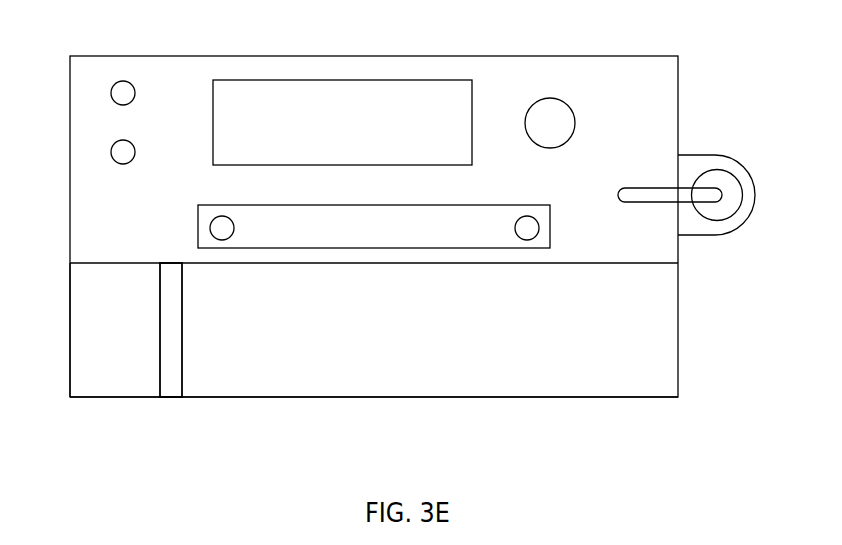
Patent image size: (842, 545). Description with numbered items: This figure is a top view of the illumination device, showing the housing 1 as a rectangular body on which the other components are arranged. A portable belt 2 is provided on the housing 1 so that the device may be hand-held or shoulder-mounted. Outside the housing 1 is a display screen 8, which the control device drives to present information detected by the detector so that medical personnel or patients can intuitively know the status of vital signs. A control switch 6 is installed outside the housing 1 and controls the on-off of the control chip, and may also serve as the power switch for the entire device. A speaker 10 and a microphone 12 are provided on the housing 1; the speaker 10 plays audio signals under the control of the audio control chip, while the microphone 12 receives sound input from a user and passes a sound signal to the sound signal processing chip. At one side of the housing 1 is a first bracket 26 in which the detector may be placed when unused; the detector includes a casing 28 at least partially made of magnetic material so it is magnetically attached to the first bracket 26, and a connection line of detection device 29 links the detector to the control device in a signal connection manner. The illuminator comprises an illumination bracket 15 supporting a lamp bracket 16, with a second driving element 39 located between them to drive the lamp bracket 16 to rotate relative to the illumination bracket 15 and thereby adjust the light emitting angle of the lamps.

The housing 1 is at (652, 95).
The portable belt 2 is at (462, 222).
The control switch 6 is at (550, 123).
The display screen 8 is at (348, 115).
The speaker 10 is at (123, 90).
The microphone 12 is at (118, 155).
The illumination bracket 15 is at (122, 340).
The lamp bracket 16 is at (488, 350).
The first bracket 26 is at (748, 197).
The casing 28 is at (737, 178).
The connection line of detection device 29 is at (687, 192).
The second driving element 39 is at (170, 372).